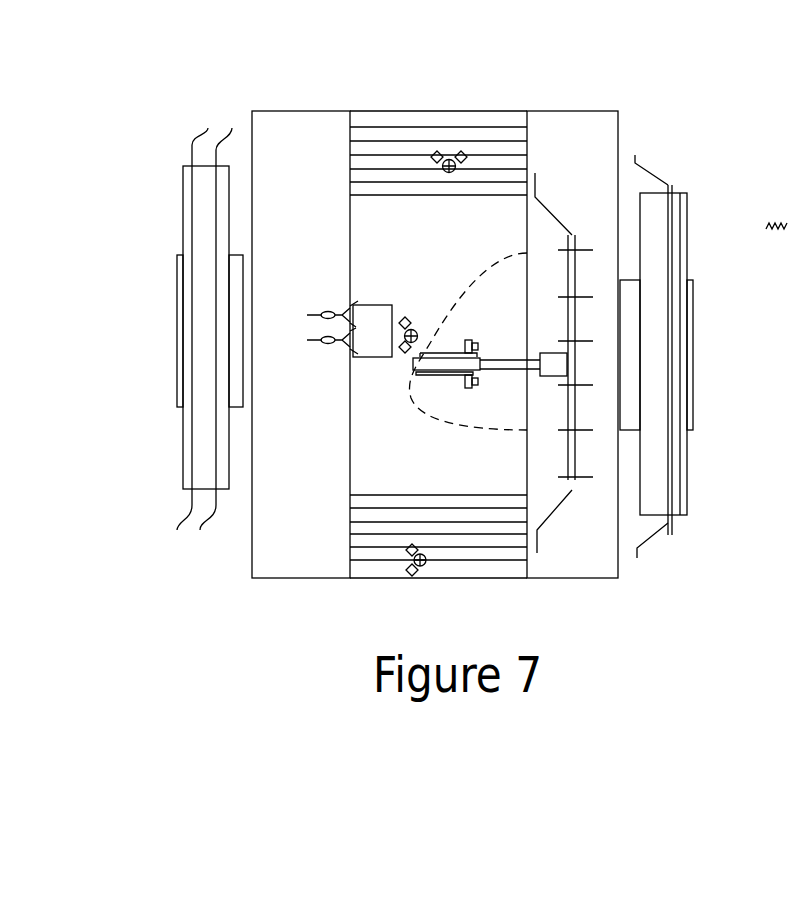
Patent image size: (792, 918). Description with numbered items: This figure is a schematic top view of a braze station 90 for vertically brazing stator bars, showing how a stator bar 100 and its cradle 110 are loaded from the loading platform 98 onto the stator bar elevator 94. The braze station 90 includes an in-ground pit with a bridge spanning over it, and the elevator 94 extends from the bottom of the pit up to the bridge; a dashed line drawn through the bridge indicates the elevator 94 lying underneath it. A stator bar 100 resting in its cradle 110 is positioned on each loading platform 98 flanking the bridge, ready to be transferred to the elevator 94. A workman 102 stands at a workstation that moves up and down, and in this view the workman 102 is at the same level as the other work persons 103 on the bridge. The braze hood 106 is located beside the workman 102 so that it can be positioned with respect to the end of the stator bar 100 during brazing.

The braze station 90 is at (300, 578).
The stator bar elevator 94 is at (490, 355).
The loading platform 98 is at (178, 367).
The stator bar 100 is at (192, 166).
The workman 102 is at (410, 320).
The work persons 103 is at (467, 154).
The braze hood 106 is at (373, 305).
The cradle 110 is at (183, 460).